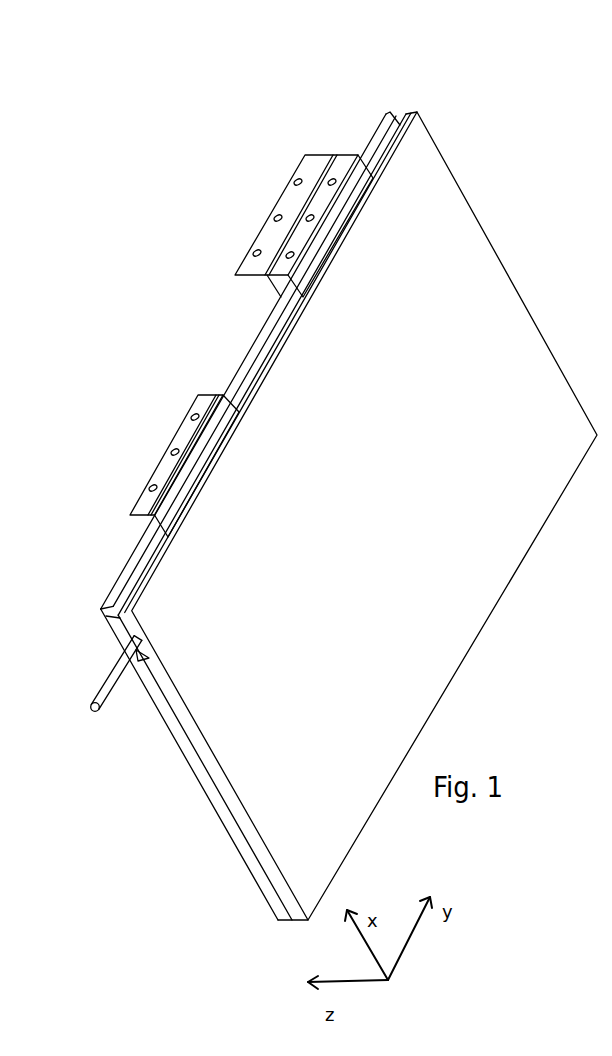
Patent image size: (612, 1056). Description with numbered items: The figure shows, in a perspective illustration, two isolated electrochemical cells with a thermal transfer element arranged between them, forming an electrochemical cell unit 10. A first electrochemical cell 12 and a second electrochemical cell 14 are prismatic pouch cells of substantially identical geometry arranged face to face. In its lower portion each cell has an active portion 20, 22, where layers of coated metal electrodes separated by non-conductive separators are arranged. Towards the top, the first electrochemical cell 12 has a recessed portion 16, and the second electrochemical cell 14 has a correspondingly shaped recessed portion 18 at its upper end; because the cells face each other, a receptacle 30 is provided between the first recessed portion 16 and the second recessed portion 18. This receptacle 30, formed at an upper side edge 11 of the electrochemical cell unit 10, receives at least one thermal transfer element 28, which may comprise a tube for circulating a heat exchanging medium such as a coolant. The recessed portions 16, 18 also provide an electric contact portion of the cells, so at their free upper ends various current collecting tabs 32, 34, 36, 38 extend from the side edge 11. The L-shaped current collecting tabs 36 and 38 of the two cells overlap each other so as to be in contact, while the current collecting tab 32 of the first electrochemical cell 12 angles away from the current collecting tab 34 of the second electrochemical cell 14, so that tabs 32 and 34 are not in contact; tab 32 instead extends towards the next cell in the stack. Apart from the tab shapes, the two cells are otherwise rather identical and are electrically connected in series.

The electrochemical cell unit 10 is at (588, 197).
The upper side edge 11 is at (407, 96).
The first electrochemical cell 12 is at (239, 877).
The second electrochemical cell 14 is at (456, 602).
The recessed portion 16 is at (125, 565).
The recessed portion 18 is at (135, 622).
The active portion 20 is at (213, 802).
The active portion 22 is at (212, 758).
The thermal transfer element 28 is at (113, 700).
The receptacle 30 is at (243, 380).
The current collecting tab 32 is at (243, 265).
The current collecting tab 34 is at (335, 222).
The L-shaped current collecting tab 36 is at (138, 522).
The L-shaped current collecting tab 38 is at (218, 442).